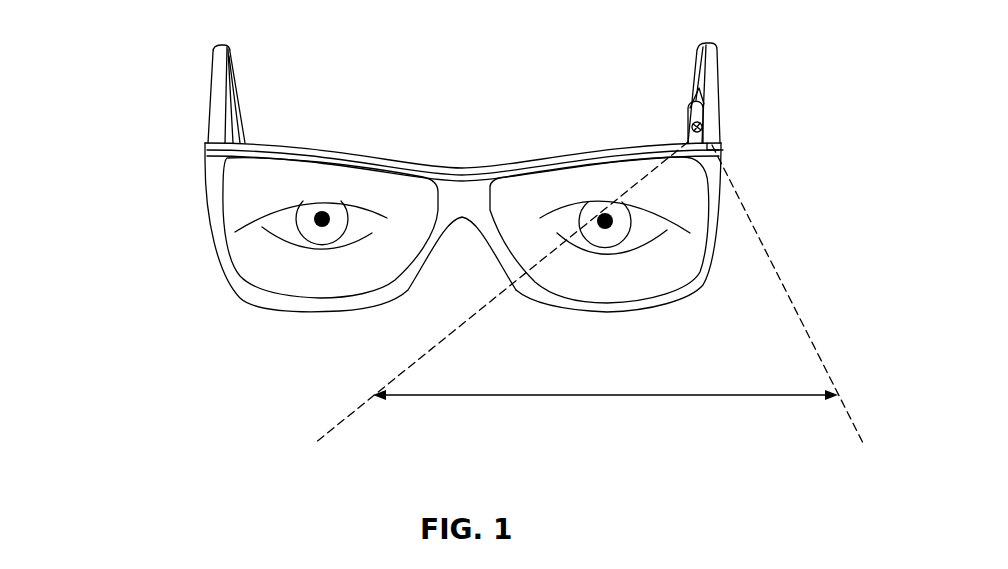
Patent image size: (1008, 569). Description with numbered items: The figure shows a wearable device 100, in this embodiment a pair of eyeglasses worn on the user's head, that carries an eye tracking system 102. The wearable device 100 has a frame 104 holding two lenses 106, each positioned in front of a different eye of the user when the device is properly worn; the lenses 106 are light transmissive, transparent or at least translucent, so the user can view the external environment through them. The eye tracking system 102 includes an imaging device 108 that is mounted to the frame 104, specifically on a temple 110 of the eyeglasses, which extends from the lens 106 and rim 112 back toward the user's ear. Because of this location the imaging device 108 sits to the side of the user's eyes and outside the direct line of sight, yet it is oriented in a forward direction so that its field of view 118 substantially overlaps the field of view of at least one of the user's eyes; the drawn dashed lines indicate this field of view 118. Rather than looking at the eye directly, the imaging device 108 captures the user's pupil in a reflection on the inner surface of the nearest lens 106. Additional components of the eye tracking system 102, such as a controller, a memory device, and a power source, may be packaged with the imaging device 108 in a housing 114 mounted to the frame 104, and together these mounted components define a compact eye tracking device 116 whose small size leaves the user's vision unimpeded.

The wearable device 100 is at (180, 122).
The eye tracking system 102 is at (680, 103).
The frame 104 is at (323, 143).
The lens 106 is at (398, 190).
The imaging device 108 is at (688, 117).
The temple 110 is at (717, 70).
The rim 112 is at (607, 313).
The housing 114 is at (693, 103).
The eye tracking device 116 is at (698, 122).
The field of view 118 is at (605, 397).